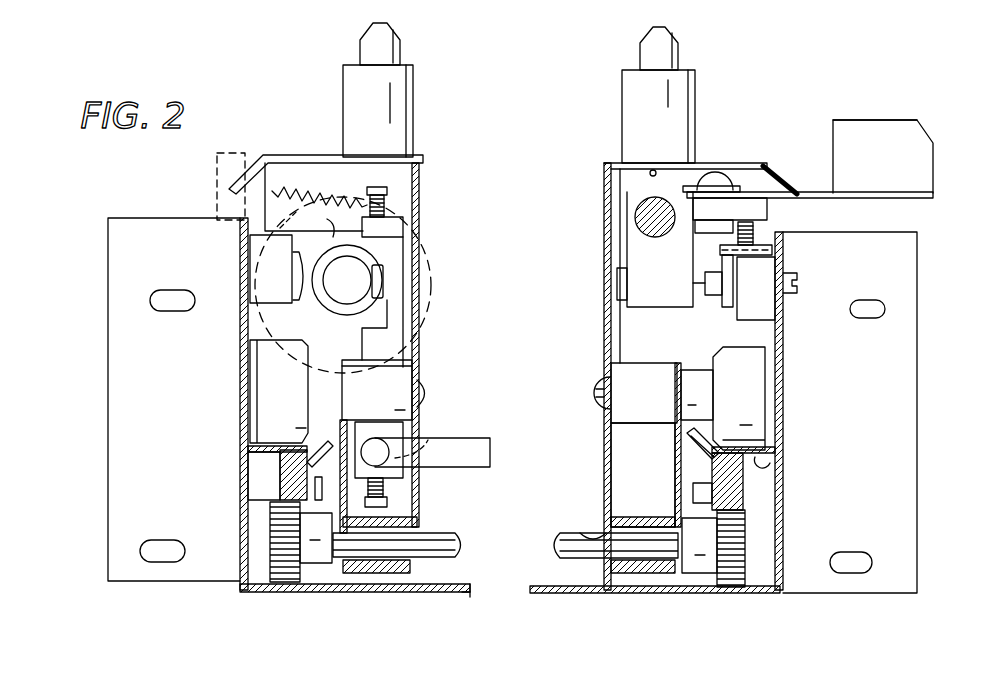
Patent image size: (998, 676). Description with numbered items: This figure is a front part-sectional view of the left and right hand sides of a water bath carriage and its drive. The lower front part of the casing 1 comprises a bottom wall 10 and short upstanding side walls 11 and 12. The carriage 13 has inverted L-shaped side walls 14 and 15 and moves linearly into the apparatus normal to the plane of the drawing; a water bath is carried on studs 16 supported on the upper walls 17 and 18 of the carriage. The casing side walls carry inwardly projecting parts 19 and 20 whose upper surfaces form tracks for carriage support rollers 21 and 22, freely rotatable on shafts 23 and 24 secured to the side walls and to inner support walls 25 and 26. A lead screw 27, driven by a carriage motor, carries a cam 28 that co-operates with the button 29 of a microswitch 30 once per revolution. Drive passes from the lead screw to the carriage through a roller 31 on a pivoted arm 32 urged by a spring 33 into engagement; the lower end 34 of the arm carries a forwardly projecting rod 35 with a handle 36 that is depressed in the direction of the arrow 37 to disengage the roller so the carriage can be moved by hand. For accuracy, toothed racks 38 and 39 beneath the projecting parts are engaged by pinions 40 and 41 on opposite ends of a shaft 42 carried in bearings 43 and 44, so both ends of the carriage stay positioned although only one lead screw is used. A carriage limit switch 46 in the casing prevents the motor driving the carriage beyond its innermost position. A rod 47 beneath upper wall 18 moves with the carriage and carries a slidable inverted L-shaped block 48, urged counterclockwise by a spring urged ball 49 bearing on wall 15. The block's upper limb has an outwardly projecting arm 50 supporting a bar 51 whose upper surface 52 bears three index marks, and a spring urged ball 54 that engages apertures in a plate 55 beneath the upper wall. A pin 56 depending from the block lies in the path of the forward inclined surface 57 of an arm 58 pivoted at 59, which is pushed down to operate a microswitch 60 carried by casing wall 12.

The casing 1 is at (95, 457).
The bottom wall 10 is at (470, 594).
The side wall 11 is at (243, 373).
The side wall 12 is at (783, 462).
The carriage 13 is at (436, 204).
The side wall 14 is at (420, 352).
The side wall 15 is at (605, 314).
The stud 16 is at (393, 47).
The upper wall 17 is at (308, 151).
The upper wall 18 is at (720, 162).
The inwardly projecting part 19 is at (268, 450).
The inwardly projecting part 20 is at (770, 463).
The carriage support roller 21 is at (260, 404).
The carriage support roller 22 is at (750, 387).
The shaft 23 is at (320, 373).
The shaft 24 is at (693, 375).
The inner support wall 25 is at (350, 400).
The inner support wall 26 is at (655, 405).
The lead screw 27 is at (374, 255).
The cam 28 is at (330, 238).
The button 29 is at (300, 288).
The microswitch 30 is at (247, 250).
The roller 31 is at (378, 293).
The arm 32 is at (397, 285).
The spring 33 is at (292, 193).
The lower end 34 is at (390, 472).
The rod 35 is at (422, 435).
The handle 36 is at (468, 447).
The arrow 37 is at (499, 479).
The toothed rack 38 is at (433, 252).
The toothed rack 39 is at (737, 495).
The pinion 40 is at (273, 522).
The pinion 41 is at (743, 533).
The shaft 42 is at (570, 530).
The bearing 43 is at (410, 533).
The bearing 44 is at (593, 533).
The carriage limit switch 46 is at (215, 173).
The rod 47 is at (648, 213).
The inverted L-shaped block 48 is at (660, 295).
The spring urged ball 49 is at (607, 281).
The arm 50 is at (827, 199).
The bar 51 is at (907, 162).
The upper surface 52 is at (877, 120).
The spring urged ball 54 is at (747, 168).
The plate 55 is at (655, 170).
The pin 56 is at (760, 237).
The forward inclined surface 57 is at (732, 229).
The arm 58 is at (720, 302).
The pivot 59 is at (703, 278).
The microswitch 60 is at (760, 275).